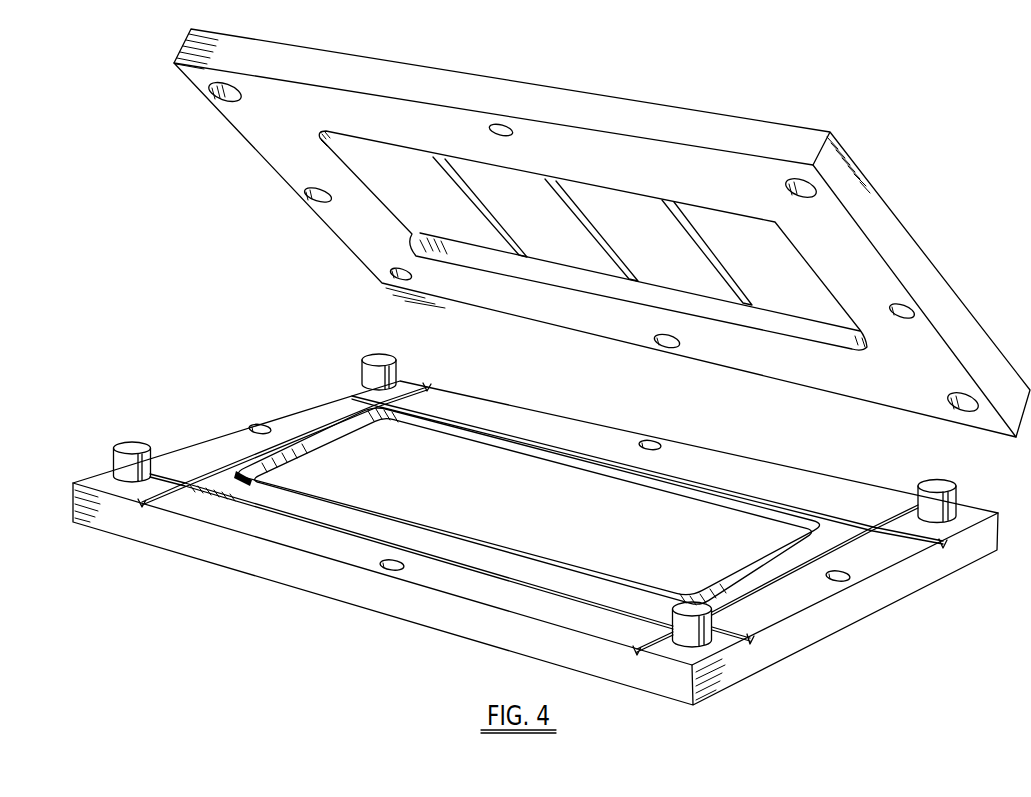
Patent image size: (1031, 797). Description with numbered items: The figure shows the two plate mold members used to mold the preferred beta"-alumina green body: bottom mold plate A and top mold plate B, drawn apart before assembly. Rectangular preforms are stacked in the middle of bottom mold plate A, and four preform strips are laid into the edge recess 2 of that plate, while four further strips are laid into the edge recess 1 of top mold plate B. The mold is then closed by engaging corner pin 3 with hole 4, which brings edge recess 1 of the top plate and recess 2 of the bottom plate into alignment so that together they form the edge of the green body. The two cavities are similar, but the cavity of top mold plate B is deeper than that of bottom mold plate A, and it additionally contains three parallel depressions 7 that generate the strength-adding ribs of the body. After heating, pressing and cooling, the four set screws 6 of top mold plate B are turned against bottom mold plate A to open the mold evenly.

The bottom mold plate A is at (535, 513).
The top mold plate B is at (595, 233).
The edge recess of the top plate 1 is at (370, 191).
The edge recess of the bottom plate 2 is at (315, 442).
The corner pin 3 is at (390, 355).
The hole 4 is at (392, 281).
The set screws 6 is at (302, 195).
The parallel depressions 7 is at (610, 257).